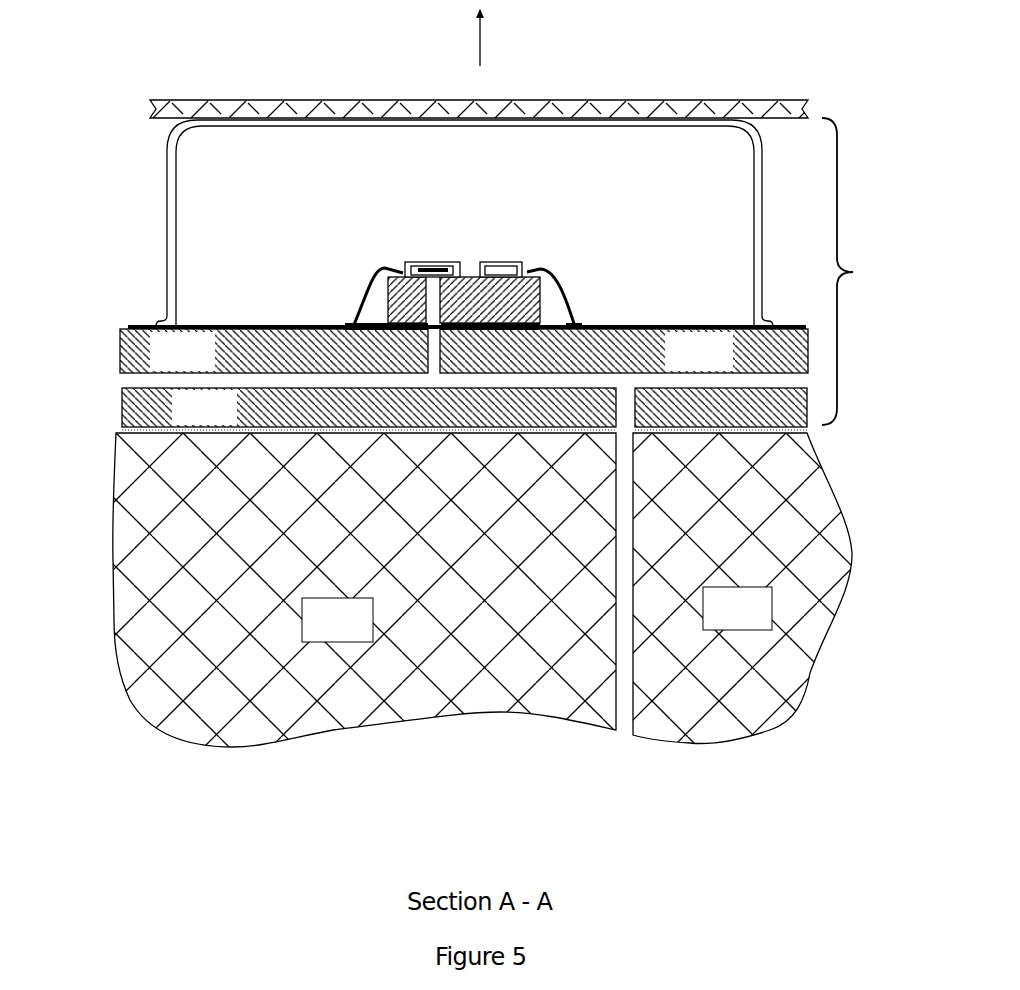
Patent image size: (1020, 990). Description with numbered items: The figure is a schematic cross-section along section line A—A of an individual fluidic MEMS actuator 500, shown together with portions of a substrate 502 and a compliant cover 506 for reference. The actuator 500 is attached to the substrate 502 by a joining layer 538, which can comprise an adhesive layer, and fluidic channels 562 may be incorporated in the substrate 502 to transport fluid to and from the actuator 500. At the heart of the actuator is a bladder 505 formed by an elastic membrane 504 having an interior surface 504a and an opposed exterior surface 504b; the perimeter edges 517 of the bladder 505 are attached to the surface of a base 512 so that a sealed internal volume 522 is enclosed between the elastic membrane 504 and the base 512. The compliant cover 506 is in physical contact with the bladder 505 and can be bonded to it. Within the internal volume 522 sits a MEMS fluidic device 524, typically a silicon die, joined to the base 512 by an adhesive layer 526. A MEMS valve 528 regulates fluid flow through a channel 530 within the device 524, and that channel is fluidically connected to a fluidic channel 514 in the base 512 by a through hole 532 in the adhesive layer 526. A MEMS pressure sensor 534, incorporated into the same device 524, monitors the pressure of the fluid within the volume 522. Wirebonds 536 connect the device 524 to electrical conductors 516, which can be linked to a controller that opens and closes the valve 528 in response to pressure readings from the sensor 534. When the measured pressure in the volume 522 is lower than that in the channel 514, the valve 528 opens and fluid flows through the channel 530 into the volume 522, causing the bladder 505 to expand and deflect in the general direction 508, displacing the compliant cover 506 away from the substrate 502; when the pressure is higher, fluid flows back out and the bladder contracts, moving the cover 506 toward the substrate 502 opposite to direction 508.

The fluidic MEMS actuator 500 is at (862, 271).
The substrate 502 is at (316, 636).
The elastic membrane 504 is at (402, 223).
The interior surface 504a is at (181, 219).
The exterior surface 504b is at (161, 223).
The bladder 505 is at (116, 144).
The compliant cover 506 is at (625, 108).
The direction 508 is at (480, 43).
The base 512 is at (464, 377).
The fluidic channel 514 is at (123, 382).
The electrical conductors 516 is at (785, 323).
The perimeter edges 517 is at (133, 303).
The internal volume 522 is at (225, 166).
The MEMS fluidic device 524 is at (473, 242).
The adhesive layer 526 is at (548, 318).
The MEMS valve 528 is at (428, 260).
The channel 530 is at (432, 288).
The through hole 532 is at (432, 325).
The MEMS pressure sensor 534 is at (505, 262).
The wirebonds 536 is at (541, 272).
The joining layer 538 is at (134, 434).
The fluidic channels 562 is at (627, 700).